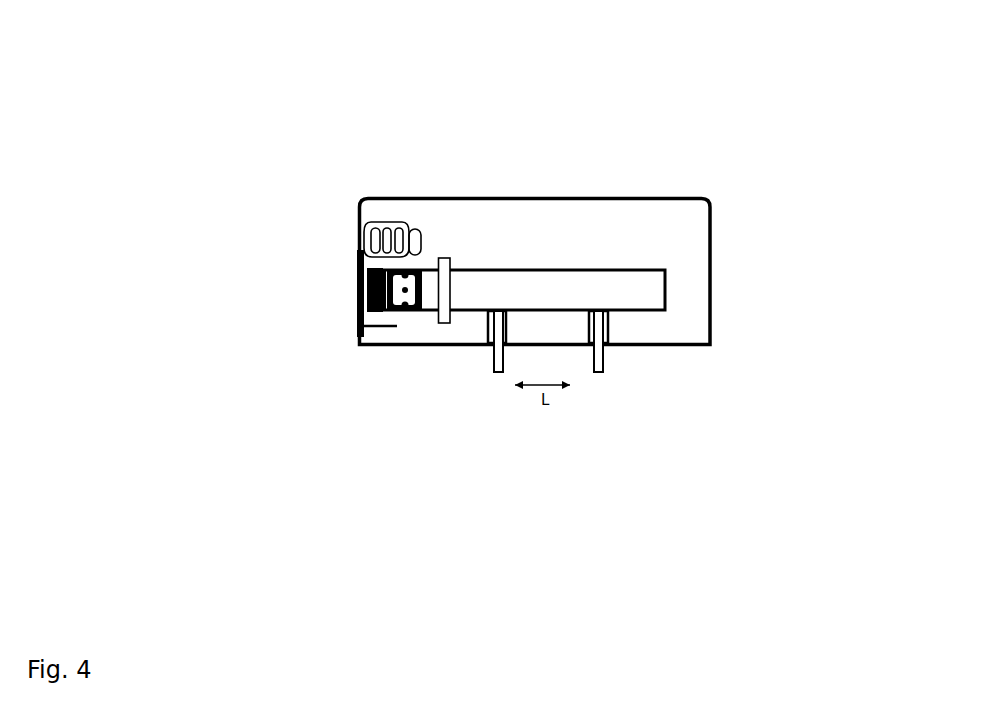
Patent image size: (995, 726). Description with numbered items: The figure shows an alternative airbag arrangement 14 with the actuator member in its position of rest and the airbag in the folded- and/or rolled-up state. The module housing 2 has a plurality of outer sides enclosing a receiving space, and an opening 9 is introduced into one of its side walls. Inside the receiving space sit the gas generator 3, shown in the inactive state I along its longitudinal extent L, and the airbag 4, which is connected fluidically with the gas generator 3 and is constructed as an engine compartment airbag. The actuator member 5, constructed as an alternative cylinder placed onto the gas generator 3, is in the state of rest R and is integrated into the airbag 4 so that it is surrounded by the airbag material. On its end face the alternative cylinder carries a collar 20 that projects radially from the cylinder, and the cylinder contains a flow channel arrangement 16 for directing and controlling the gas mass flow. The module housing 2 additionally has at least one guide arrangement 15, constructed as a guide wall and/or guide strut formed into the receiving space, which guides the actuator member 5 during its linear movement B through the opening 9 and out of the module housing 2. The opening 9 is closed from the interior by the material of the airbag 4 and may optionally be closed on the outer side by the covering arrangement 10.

The module housing 2 is at (633, 198).
The gas generator 3 is at (645, 295).
The airbag 4 is at (400, 225).
The actuator member 5 is at (390, 291).
The opening 9 is at (358, 303).
The covering arrangement 10 is at (357, 283).
The alternative airbag arrangement 14 is at (702, 78).
The guide arrangement 15 is at (359, 249).
The flow channel arrangement 16 is at (357, 315).
The collar 20 is at (450, 258).